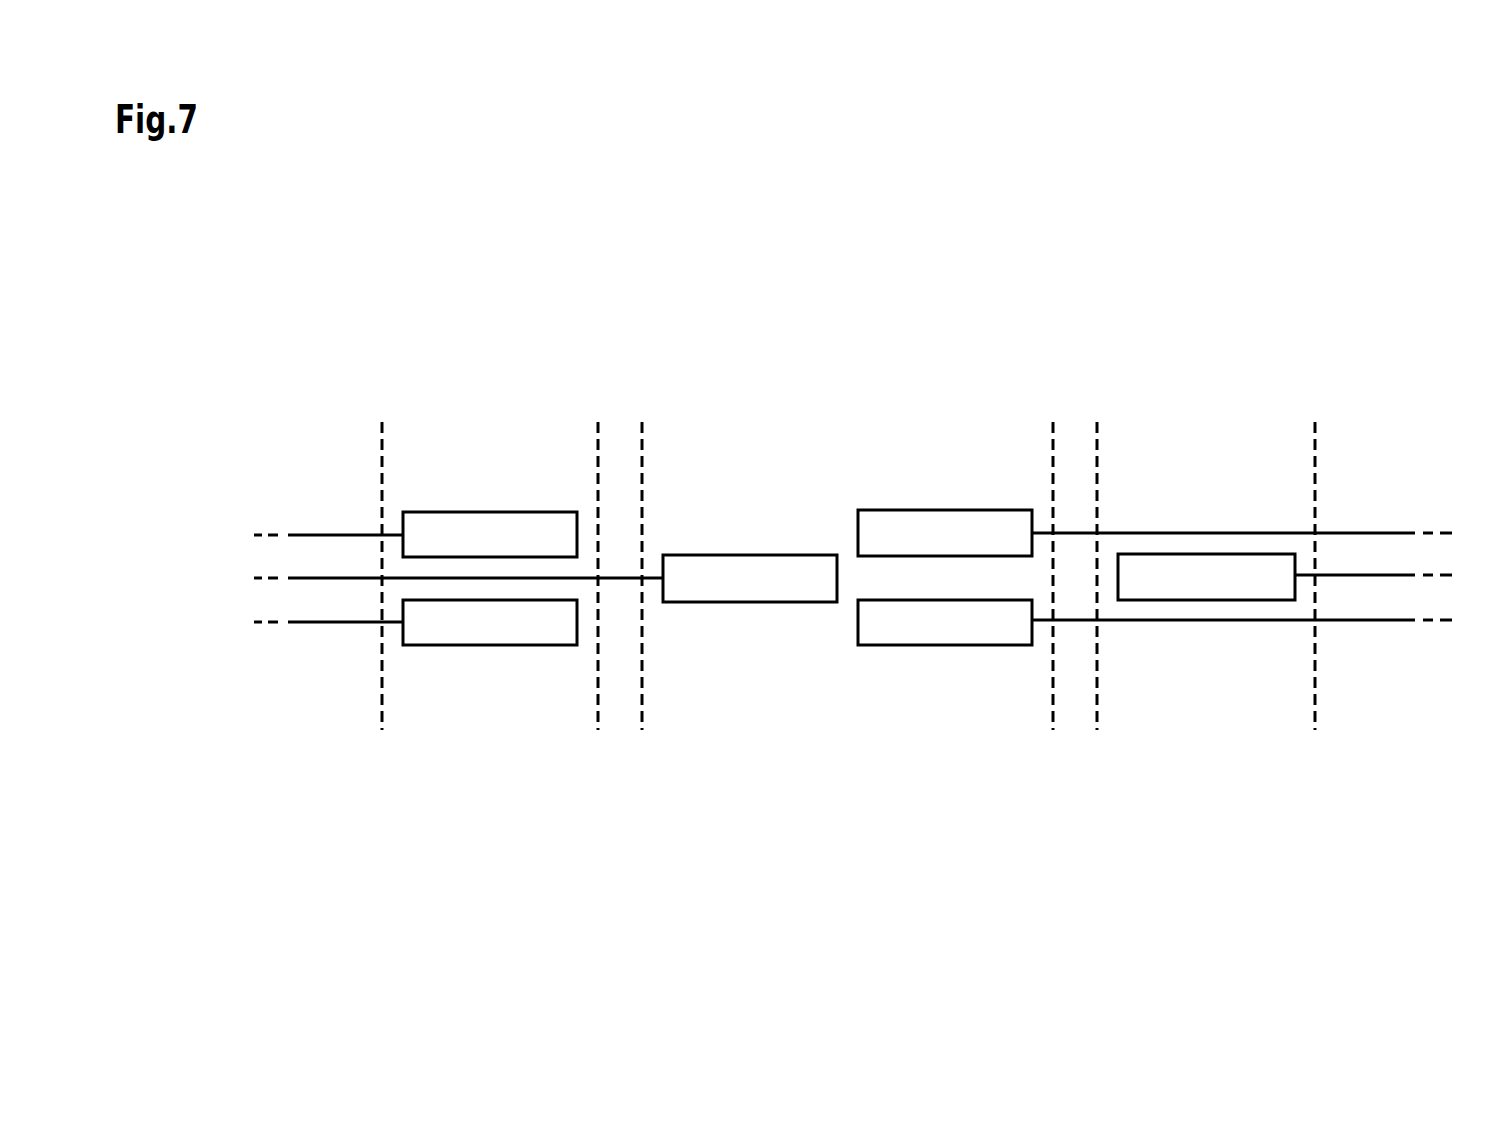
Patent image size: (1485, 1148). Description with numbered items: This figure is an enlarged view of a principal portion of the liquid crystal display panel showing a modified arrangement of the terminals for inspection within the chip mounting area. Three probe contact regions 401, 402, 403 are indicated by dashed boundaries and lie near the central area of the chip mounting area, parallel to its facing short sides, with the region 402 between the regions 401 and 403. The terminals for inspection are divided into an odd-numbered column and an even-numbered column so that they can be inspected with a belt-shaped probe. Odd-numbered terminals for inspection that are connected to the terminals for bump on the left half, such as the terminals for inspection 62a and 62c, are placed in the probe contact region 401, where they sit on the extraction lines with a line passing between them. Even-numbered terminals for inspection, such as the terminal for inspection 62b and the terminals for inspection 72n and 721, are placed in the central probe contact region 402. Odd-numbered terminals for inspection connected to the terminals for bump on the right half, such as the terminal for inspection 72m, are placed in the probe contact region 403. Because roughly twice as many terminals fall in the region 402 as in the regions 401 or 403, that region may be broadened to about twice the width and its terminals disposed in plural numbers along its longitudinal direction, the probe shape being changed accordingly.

The probe contact region 401 is at (409, 416).
The probe contact region 402 is at (738, 420).
The probe contact region 403 is at (1285, 422).
The terminal for inspection 62a is at (483, 512).
The terminal for inspection 62b is at (747, 602).
The terminal for inspection 62c is at (490, 645).
The terminal for inspection 72n is at (942, 510).
The terminal for inspection 72m is at (1202, 554).
The terminal for inspection 721 is at (940, 645).